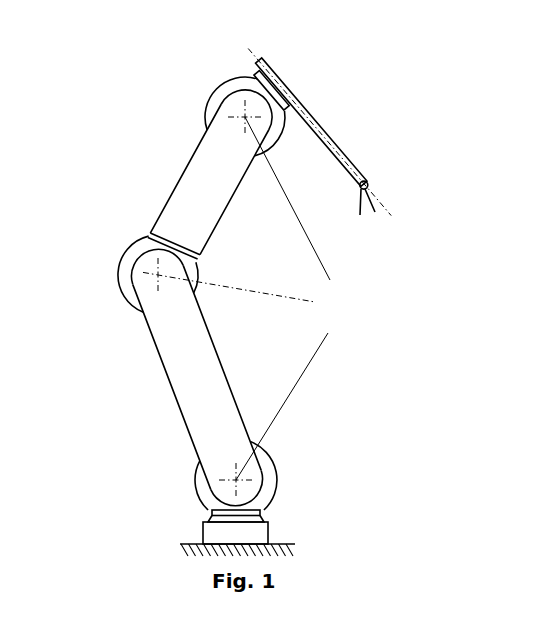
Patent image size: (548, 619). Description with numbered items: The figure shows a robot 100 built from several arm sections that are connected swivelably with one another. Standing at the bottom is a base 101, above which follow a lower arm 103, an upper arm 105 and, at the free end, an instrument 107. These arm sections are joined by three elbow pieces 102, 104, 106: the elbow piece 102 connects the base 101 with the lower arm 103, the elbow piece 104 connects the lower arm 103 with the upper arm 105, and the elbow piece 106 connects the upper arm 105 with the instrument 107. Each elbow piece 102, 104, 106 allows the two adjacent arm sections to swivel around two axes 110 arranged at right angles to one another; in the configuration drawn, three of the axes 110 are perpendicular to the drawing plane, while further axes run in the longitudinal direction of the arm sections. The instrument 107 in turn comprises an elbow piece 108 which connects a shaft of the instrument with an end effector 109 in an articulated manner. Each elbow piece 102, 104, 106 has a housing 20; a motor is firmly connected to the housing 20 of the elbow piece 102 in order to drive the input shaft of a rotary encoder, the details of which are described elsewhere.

The robot 100 is at (146, 126).
The base 101 is at (210, 532).
The elbow piece 102 is at (203, 487).
The lower arm 103 is at (195, 378).
The elbow piece 104 is at (122, 285).
The upper arm 105 is at (202, 183).
The elbow piece 106 is at (213, 100).
The instrument 107 is at (308, 115).
The elbow piece 108 is at (367, 182).
The end effector 109 is at (377, 207).
The axes 110 is at (256, 298).
The housing 20 is at (223, 78).